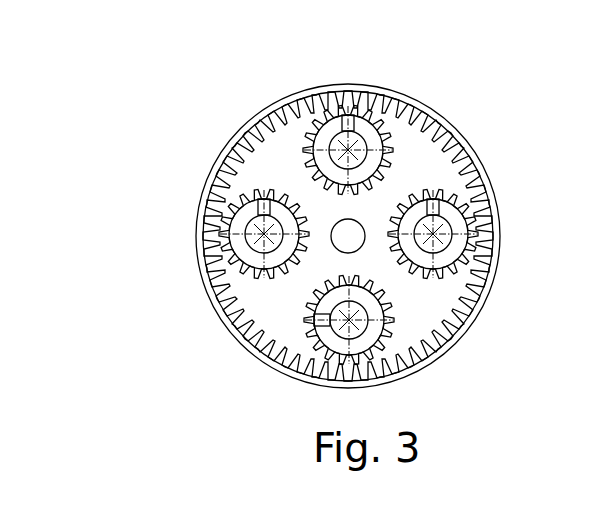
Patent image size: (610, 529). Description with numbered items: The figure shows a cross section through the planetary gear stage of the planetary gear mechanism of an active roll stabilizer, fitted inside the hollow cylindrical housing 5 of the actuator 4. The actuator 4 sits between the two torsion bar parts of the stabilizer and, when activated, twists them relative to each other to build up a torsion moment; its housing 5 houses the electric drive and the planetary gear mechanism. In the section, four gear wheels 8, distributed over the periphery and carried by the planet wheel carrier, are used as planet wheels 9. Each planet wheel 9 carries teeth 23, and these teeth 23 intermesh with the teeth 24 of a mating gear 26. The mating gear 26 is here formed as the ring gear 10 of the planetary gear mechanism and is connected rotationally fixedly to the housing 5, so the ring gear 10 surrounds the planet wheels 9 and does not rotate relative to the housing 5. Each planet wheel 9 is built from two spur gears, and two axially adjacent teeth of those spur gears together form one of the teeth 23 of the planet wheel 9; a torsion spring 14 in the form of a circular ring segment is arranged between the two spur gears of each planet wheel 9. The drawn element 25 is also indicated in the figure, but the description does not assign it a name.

The actuator 4 is at (371, 84).
The ring gear body 25 is at (287, 112).
The housing 5 is at (379, 225).
The ring gear 10 is at (379, 225).
The mating gear 26 is at (511, 94).
The teeth 24 is at (475, 178).
The torsion spring 14 is at (205, 275).
The gear wheel 8 is at (480, 231).
The planet wheel 9 is at (490, 219).
The teeth 23 is at (477, 287).